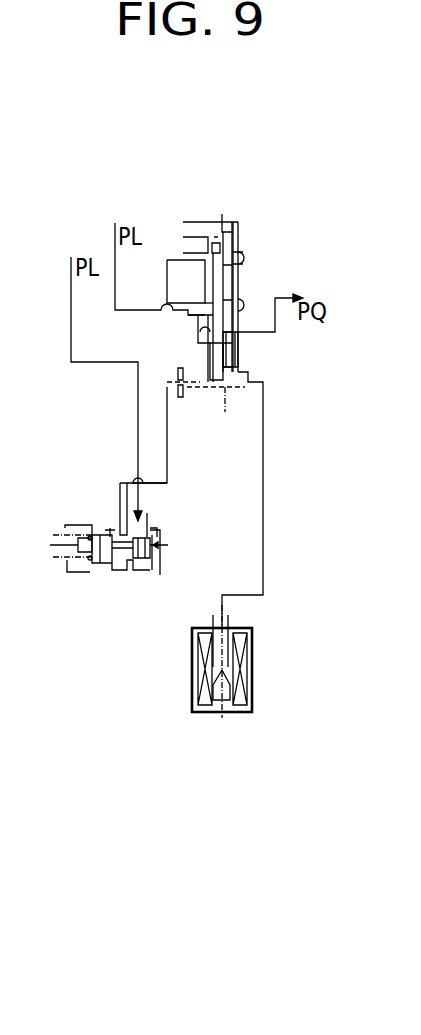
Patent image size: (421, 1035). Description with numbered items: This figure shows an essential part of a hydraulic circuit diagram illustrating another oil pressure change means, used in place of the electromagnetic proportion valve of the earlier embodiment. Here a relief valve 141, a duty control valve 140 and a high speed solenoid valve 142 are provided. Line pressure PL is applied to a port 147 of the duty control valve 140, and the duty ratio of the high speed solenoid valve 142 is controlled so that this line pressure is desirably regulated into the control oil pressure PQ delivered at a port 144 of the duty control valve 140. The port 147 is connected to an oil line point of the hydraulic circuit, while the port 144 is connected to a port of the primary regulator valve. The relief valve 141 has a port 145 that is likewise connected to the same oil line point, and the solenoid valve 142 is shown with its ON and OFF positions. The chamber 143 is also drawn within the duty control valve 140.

The duty control valve 140 is at (255, 240).
The relief valve 141 is at (90, 582).
The high speed solenoid valve 142 is at (257, 686).
The line pressure chamber 143 is at (195, 262).
The port 144 is at (245, 340).
The port 145 is at (141, 517).
The port 147 is at (190, 317).